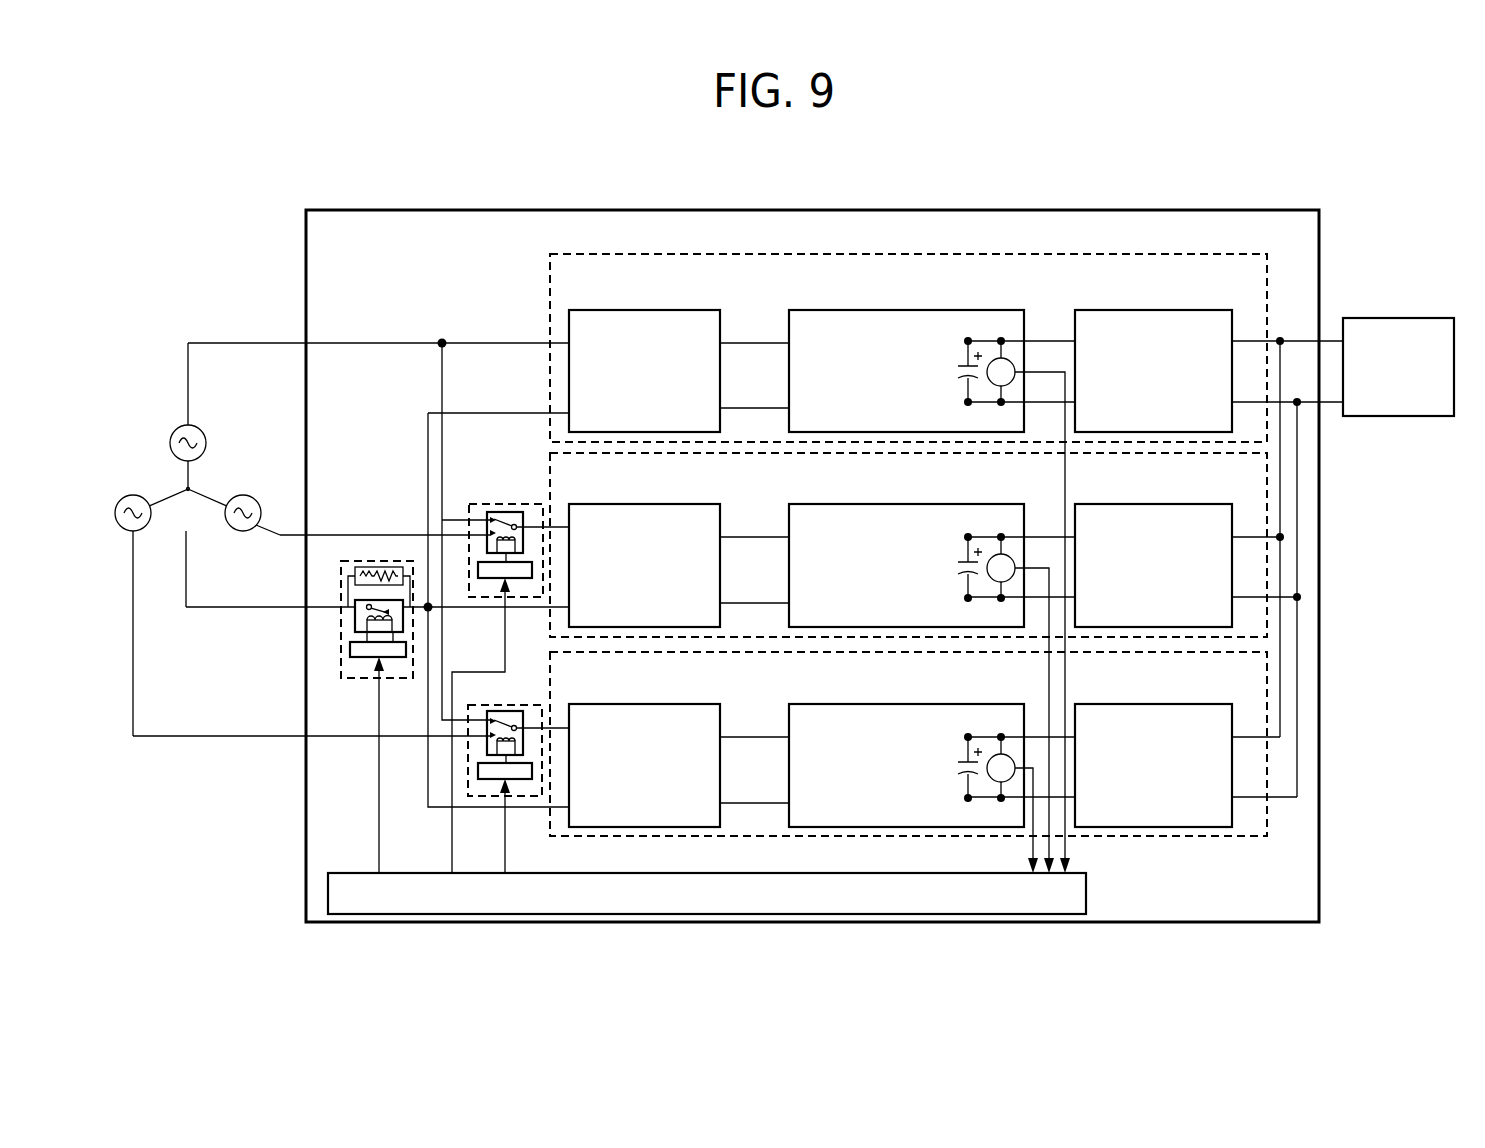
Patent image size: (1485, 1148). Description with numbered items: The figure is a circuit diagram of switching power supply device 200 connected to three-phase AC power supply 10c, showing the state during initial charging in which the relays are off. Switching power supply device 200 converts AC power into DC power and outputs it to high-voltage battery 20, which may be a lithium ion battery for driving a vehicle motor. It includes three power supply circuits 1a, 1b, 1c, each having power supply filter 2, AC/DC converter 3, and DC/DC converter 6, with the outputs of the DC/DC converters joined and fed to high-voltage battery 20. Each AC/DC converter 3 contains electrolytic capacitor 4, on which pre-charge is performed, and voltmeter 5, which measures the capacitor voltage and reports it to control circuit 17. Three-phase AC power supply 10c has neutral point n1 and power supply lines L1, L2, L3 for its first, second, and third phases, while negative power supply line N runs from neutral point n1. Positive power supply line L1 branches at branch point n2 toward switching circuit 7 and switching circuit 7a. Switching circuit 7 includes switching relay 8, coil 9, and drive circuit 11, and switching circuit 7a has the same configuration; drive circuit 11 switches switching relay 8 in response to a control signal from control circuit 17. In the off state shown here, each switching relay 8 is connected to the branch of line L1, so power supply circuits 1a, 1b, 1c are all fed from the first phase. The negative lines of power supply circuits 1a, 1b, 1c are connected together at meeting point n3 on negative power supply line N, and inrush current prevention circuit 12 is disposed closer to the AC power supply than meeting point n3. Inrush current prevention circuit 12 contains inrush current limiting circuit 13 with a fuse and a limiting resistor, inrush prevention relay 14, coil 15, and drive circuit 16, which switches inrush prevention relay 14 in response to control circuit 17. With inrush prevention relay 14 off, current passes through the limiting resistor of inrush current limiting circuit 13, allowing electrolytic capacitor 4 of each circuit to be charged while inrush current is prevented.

The switching power supply device 200 is at (436, 210).
The power supply circuit 1a is at (550, 262).
The power supply circuit 1b is at (550, 462).
The power supply circuit 1c is at (550, 672).
The power supply filter 2 is at (645, 310).
The AC/DC converter 3 is at (870, 310).
The electrolytic capacitor 4 is at (960, 370).
The voltmeter 5 is at (996, 356).
The DC/DC converter 6 is at (1147, 309).
The switching circuit 7 is at (469, 504).
The switching circuit 7a is at (468, 705).
The switching relay 8 is at (505, 517).
The coil 9 is at (495, 545).
The drive circuit 11 is at (481, 570).
The inrush current prevention circuit 12 is at (355, 561).
The inrush current limiting circuit 13 is at (391, 567).
The inrush prevention relay 14 is at (365, 622).
The coil 15 is at (398, 628).
The drive circuit 16 is at (362, 658).
The control circuit 17 is at (1087, 888).
The high-voltage battery 20 is at (1378, 317).
The three-phase AC power supply 10c is at (220, 470).
The neutral point n1 is at (188, 489).
The branch point n2 is at (442, 337).
The meeting point n3 is at (432, 610).
The power supply line L1 is at (378, 326).
The power supply line L2 is at (383, 522).
The power supply line L3 is at (311, 722).
The negative power supply line N is at (377, 570).